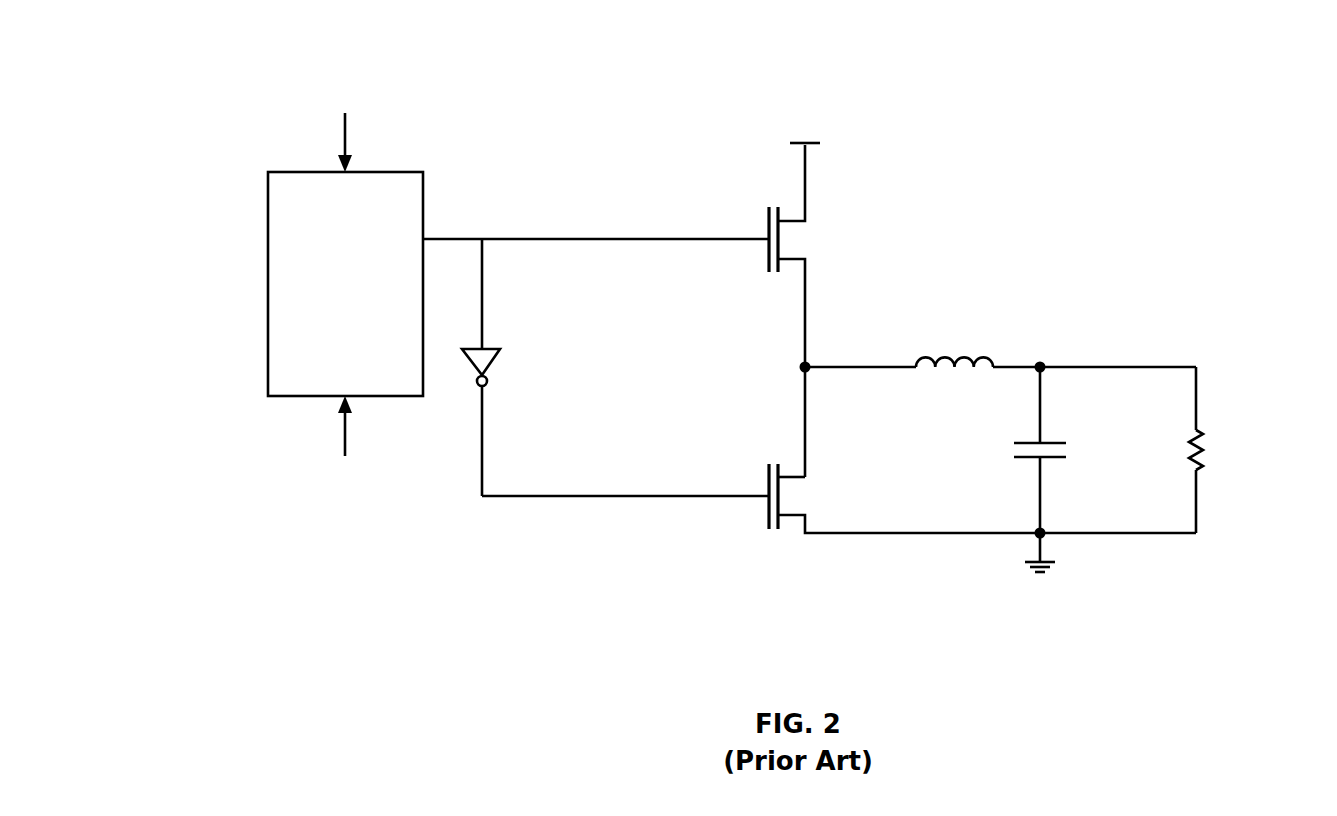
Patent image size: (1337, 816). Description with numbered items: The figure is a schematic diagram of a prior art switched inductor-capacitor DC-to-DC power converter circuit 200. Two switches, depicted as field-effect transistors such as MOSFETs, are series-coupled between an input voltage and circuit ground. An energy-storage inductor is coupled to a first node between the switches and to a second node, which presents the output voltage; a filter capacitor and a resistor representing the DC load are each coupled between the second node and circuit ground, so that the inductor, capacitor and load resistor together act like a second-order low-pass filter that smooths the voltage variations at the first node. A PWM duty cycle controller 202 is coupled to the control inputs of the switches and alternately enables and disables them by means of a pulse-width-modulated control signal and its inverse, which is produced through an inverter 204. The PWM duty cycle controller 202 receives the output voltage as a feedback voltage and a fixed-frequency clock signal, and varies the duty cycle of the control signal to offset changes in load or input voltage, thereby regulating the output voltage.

The switched inductor-capacitor DC-to-DC power converter circuit 200 is at (220, 41).
The PWM duty cycle controller 202 is at (267, 345).
The inverter 204 is at (496, 364).